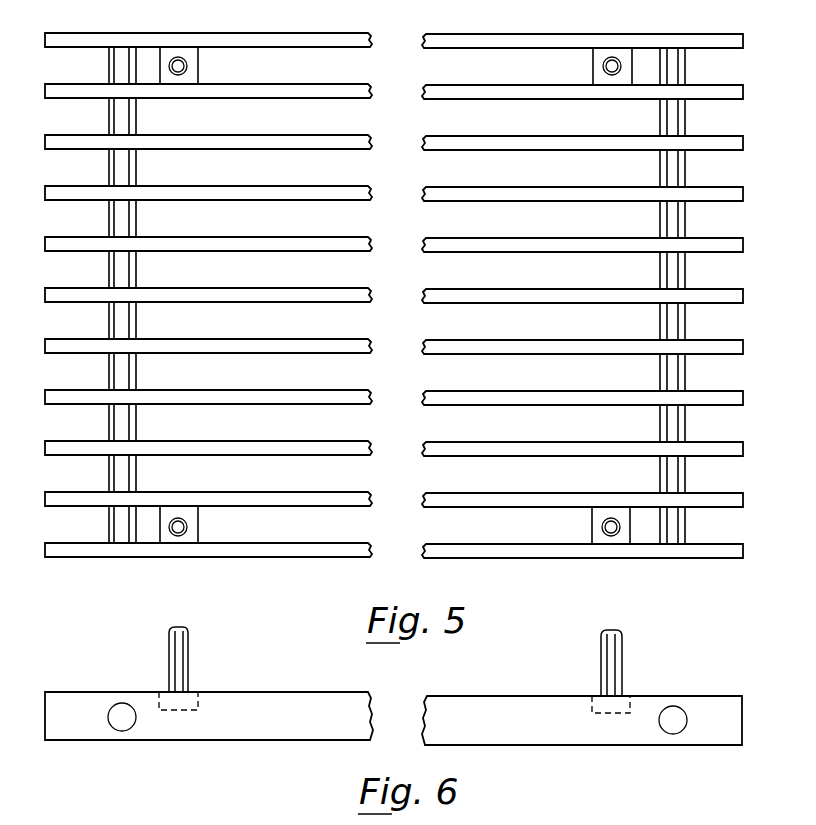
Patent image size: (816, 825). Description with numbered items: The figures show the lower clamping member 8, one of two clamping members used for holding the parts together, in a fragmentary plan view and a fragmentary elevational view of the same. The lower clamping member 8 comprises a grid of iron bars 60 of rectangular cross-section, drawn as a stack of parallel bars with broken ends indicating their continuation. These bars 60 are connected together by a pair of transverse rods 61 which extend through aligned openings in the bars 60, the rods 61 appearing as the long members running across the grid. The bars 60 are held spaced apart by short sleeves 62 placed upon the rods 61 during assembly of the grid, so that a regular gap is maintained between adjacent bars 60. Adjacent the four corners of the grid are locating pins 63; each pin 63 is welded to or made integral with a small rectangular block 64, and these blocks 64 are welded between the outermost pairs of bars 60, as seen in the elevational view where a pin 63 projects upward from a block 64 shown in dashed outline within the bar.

In FIG. 5, the lower clamping member 8 is at (330, 43).
In FIG. 5, the iron bars 60 is at (553, 44).
In FIG. 5, the transverse rods 61 is at (672, 323).
In FIG. 5, the short sleeves 62 is at (673, 78).
In FIG. 6, the locating pins 63 is at (178, 646).
In FIG. 6, the rectangular blocks 64 is at (187, 700).